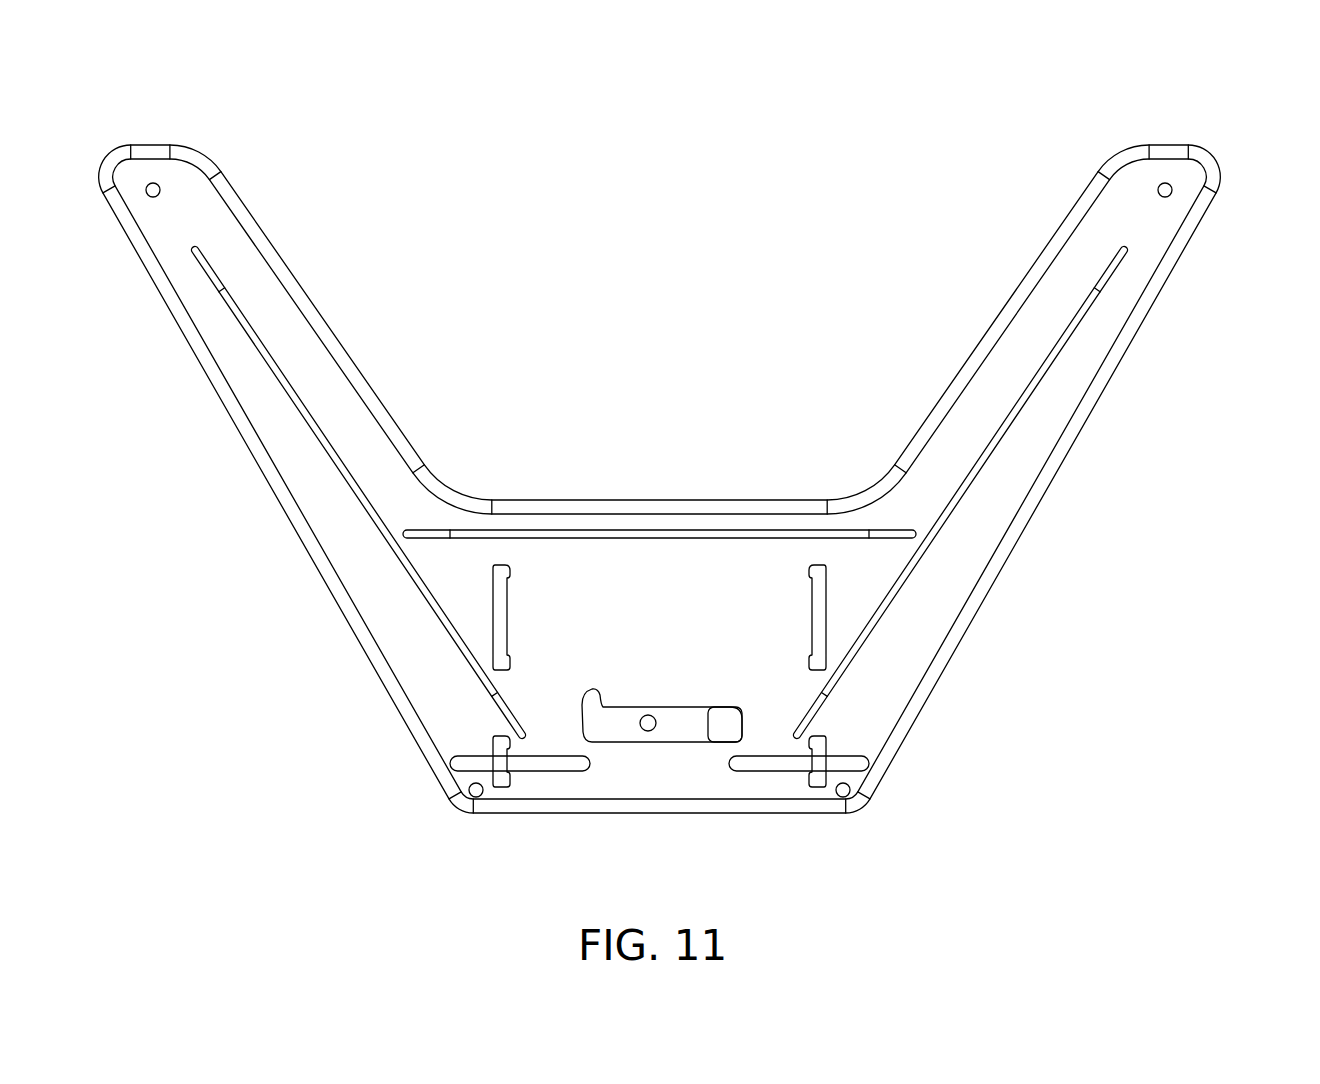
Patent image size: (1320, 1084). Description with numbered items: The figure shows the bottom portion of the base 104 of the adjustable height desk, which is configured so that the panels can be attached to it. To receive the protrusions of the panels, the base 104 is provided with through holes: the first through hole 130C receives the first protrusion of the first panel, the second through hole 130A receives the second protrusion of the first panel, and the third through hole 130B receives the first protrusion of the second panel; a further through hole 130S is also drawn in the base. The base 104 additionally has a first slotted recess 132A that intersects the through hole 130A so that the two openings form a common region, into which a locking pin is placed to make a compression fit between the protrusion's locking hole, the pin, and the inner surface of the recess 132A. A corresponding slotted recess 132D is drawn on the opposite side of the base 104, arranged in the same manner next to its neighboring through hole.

The base 104 is at (1222, 155).
The second through hole 130A is at (502, 748).
The third through hole 130B is at (811, 613).
The first through hole 130C is at (500, 588).
The tab 130S is at (822, 748).
The first slotted recess 132A is at (549, 762).
The slot 132D is at (773, 767).